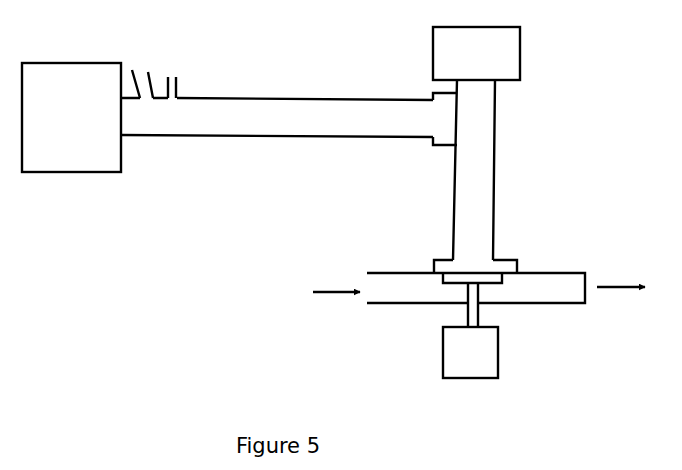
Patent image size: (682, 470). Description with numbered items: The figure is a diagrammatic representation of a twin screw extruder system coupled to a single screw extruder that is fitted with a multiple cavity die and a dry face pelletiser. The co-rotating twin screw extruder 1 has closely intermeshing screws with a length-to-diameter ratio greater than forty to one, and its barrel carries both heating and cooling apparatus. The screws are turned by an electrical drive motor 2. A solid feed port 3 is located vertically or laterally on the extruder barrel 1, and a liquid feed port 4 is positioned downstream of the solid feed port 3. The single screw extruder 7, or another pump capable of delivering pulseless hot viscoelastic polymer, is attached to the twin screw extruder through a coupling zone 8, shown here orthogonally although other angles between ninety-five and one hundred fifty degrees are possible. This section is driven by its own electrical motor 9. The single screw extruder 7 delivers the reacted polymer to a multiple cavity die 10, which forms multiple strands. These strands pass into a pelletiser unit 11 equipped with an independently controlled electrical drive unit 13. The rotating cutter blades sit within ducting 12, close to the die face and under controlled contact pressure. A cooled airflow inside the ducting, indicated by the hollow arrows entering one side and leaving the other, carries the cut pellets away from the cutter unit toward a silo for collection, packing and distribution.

The co-rotating screw extruder 1 is at (277, 117).
The electrical drive motor 2 is at (71, 117).
The solid feed port 3 is at (138, 61).
The liquid feed port 4 is at (182, 66).
The single screw extruder 7 is at (474, 170).
The coupling zone 8 is at (438, 113).
The electrical motor 9 is at (476, 53).
The multiple cavity die 10 is at (441, 264).
The pelletiser unit 11 is at (398, 282).
The ducting 12 is at (515, 290).
The electrical drive unit 13 is at (470, 330).